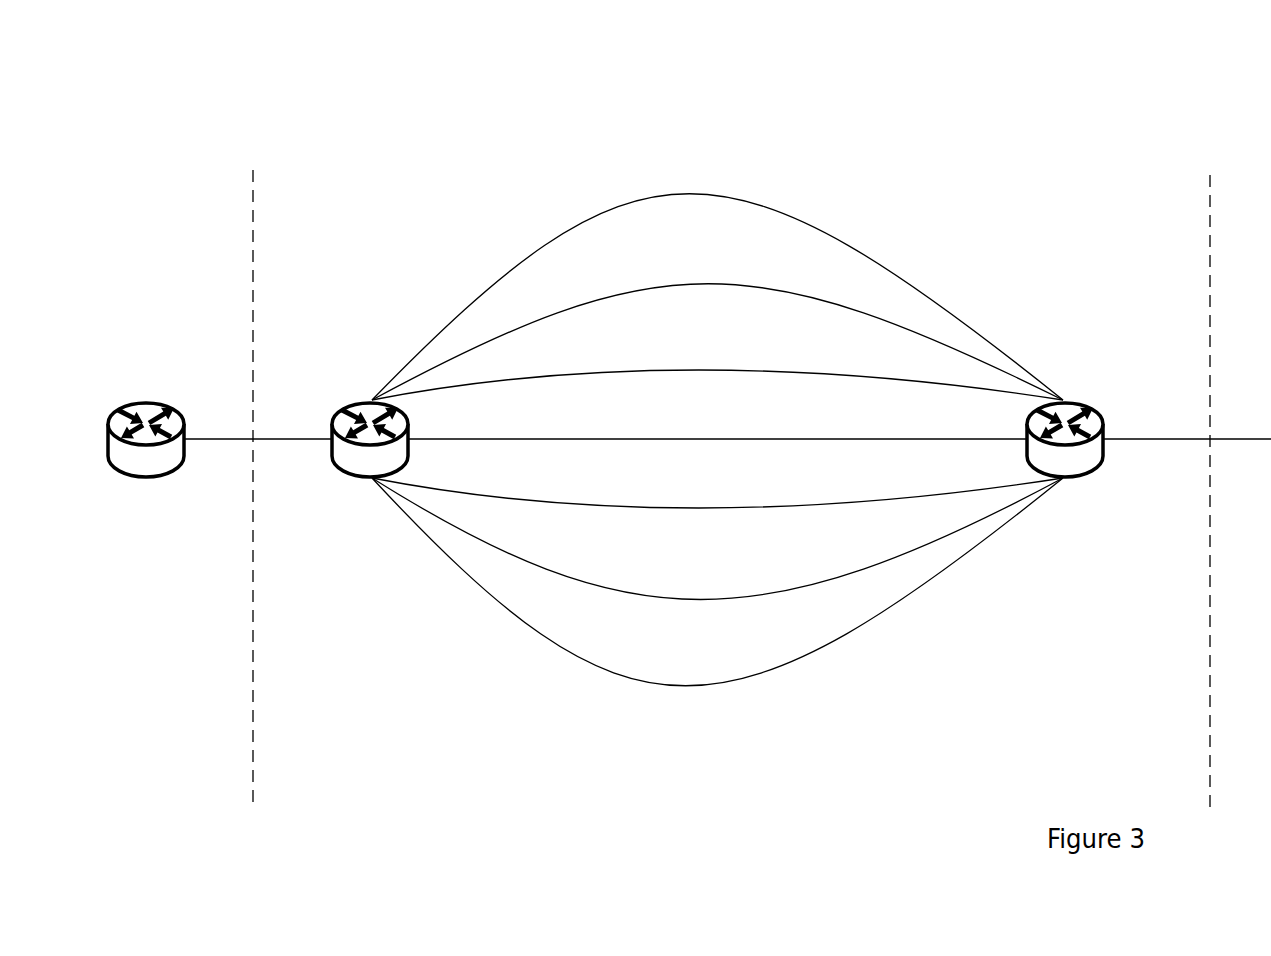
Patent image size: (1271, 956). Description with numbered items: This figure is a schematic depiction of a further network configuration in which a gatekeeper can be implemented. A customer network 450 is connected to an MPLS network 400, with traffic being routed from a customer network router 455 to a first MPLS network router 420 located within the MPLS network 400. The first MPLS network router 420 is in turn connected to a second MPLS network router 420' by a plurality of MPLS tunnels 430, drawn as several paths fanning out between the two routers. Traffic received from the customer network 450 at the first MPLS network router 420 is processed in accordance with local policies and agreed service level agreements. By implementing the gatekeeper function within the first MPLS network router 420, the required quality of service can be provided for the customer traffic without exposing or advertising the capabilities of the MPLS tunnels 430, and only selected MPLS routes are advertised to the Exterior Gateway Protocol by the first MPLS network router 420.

The customer network 450 is at (94, 147).
The customer network router 455 is at (148, 400).
The MPLS network 400 is at (688, 147).
The first MPLS network router 420 is at (370, 332).
The second MPLS network router 420' is at (1065, 321).
The MPLS tunnels 430 is at (600, 302).